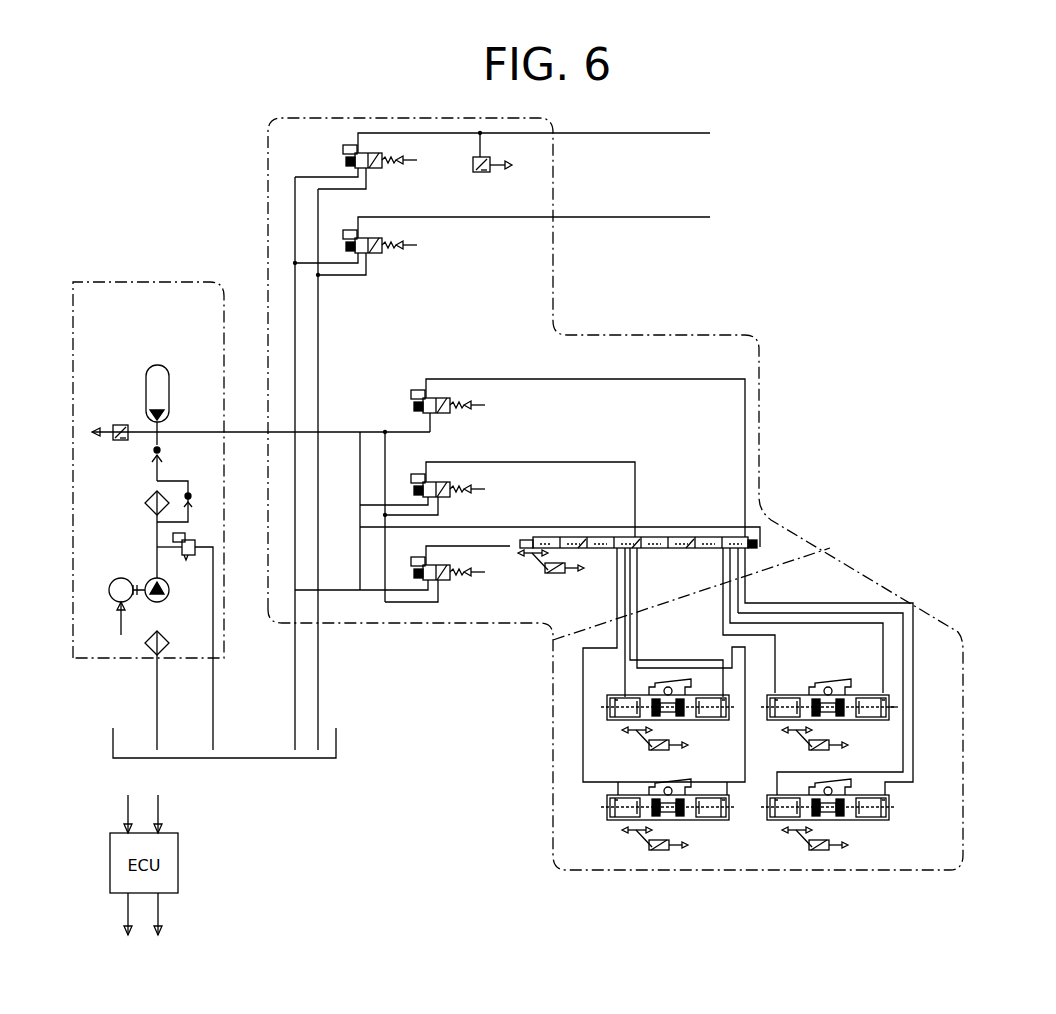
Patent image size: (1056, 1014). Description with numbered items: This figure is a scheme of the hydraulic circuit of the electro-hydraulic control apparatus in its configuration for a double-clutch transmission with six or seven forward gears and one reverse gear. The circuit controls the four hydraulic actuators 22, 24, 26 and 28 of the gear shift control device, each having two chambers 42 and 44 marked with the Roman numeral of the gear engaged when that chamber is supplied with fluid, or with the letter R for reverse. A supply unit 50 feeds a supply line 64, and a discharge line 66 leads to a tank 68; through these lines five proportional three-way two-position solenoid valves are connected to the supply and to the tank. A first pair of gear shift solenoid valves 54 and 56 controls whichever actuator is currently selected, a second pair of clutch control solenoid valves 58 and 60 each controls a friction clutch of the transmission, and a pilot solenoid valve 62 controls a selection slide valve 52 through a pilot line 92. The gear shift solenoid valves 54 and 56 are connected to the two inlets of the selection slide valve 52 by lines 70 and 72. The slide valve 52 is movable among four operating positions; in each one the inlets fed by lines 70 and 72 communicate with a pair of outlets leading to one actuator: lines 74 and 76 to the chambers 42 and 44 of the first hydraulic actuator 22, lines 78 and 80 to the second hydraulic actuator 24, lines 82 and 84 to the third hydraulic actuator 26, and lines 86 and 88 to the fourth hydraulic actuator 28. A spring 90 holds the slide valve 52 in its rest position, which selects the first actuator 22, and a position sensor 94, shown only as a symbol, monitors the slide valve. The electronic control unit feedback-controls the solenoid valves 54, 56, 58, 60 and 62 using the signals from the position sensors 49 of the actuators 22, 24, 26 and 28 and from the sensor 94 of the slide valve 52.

The first hydraulic actuator 22 is at (607, 705).
The second hydraulic actuator 24 is at (607, 806).
The third hydraulic actuator 26 is at (963, 855).
The fourth hydraulic actuator 28 is at (892, 702).
The chamber 42 is at (622, 700).
The chamber 44 is at (875, 700).
The position sensor 49 is at (660, 752).
The supply unit 50 is at (140, 282).
The selection slide valve 52 is at (687, 537).
The gear shift solenoid valve 54 is at (432, 380).
The gear shift solenoid valve 56 is at (440, 480).
The clutch control solenoid valve 58 is at (368, 255).
The clutch control solenoid valve 60 is at (378, 150).
The pilot solenoid valve 62 is at (445, 583).
The supply line 64 is at (248, 432).
The discharge line 66 is at (297, 665).
The tank 68 is at (248, 758).
The line 70 is at (525, 379).
The line 72 is at (572, 462).
The line 74 is at (745, 577).
The line 76 is at (605, 600).
The line 78 is at (583, 770).
The line 80 is at (800, 650).
The line 82 is at (920, 705).
The line 84 is at (963, 752).
The line 86 is at (770, 650).
The line 88 is at (918, 640).
The spring 90 is at (760, 544).
The pilot line 92 is at (508, 545).
The position sensor 94 is at (565, 572).